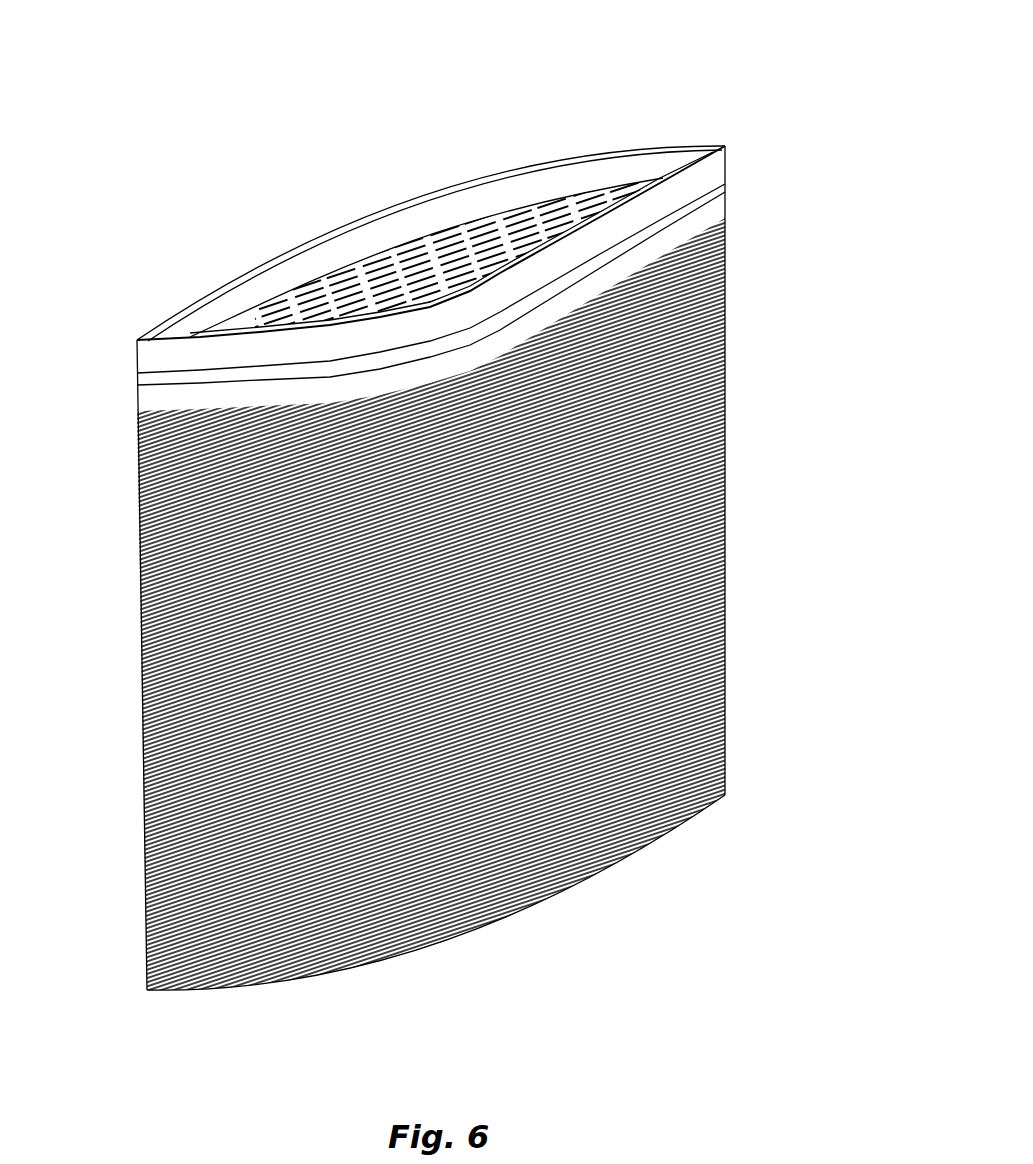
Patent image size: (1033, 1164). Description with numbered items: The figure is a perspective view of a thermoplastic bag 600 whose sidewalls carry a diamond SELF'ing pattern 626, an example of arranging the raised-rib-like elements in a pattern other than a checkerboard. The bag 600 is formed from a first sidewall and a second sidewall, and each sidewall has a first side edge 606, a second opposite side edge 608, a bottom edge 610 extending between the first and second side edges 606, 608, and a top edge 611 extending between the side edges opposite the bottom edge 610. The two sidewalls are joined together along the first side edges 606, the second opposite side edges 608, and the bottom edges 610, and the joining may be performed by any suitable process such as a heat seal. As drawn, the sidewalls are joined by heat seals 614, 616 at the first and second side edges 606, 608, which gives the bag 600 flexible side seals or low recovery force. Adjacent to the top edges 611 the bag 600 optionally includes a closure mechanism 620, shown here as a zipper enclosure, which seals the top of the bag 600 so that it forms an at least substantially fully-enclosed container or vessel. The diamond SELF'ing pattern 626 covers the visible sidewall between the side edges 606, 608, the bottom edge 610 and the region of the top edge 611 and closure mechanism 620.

The thermoplastic bag 600 is at (436, 516).
The first side edge 606 is at (136, 780).
The second opposite side edge 608 is at (728, 638).
The bottom edge 610 is at (362, 964).
The top edge 611 is at (476, 284).
The heat seal 614 is at (136, 650).
The heat seal 616 is at (728, 448).
The closure mechanism 620 is at (728, 186).
The diamond SELF'ing pattern 626 is at (648, 777).